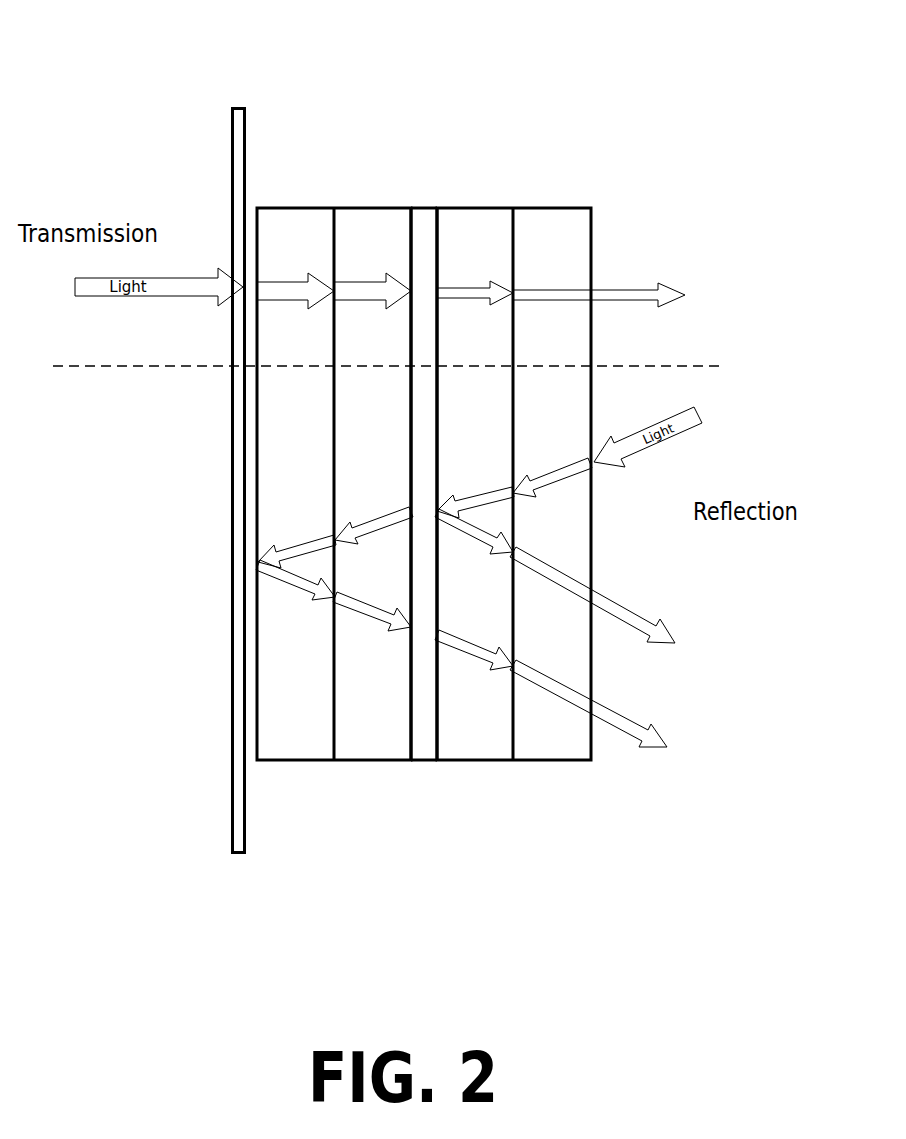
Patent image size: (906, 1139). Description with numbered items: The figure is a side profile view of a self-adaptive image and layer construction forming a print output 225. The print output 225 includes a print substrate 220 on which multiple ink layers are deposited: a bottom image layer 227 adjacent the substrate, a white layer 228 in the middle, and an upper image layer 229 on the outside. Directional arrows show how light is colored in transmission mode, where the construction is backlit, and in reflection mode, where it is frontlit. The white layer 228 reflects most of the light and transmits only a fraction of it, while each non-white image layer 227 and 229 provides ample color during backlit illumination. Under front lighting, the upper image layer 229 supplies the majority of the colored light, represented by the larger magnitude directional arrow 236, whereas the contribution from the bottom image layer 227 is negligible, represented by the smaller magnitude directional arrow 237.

The print output 225 is at (176, 56).
The print substrate 220 is at (240, 157).
The bottom image layer 227 is at (372, 762).
The white layer 228 is at (425, 217).
The upper image layer 229 is at (555, 762).
The magnitude directional arrow 236 is at (675, 634).
The magnitude directional arrow 237 is at (657, 738).